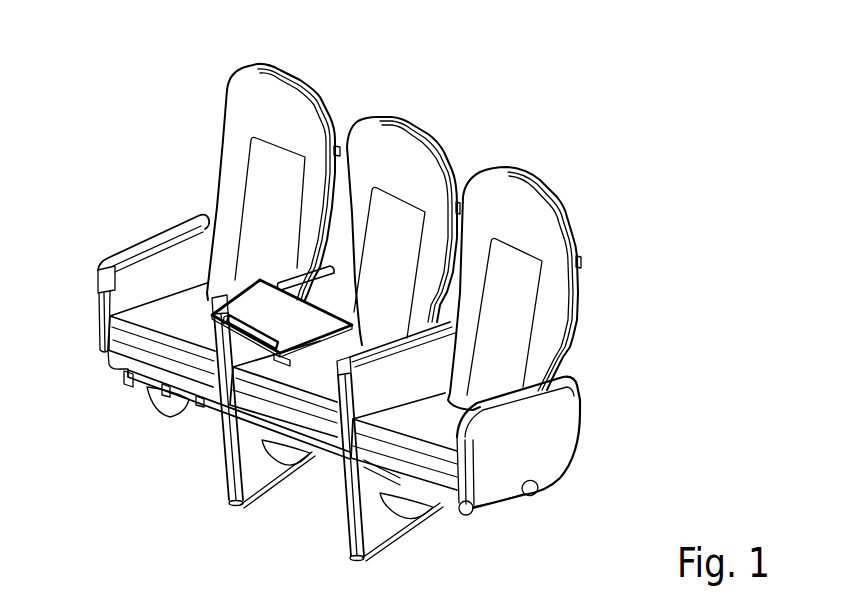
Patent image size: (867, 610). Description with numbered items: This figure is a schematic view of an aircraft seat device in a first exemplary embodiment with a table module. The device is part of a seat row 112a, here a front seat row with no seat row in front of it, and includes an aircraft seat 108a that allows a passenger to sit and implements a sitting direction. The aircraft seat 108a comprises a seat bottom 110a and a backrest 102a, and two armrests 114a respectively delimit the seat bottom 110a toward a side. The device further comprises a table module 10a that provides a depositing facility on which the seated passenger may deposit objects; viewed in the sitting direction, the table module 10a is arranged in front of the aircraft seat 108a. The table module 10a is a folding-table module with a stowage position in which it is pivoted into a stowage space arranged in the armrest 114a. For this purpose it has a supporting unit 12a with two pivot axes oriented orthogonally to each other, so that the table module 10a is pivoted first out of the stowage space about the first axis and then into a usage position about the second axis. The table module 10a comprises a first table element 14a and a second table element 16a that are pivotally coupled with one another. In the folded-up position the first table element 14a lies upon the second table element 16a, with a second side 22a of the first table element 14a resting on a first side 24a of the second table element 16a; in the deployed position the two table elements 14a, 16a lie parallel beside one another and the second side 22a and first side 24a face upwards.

The table module 10a is at (338, 334).
The supporting unit 12a is at (203, 293).
The first table element 14a is at (325, 332).
The second table element 16a is at (203, 293).
The second side of the first table element 22a is at (297, 283).
The first side of the second table element 24a is at (256, 294).
The backrest 102a is at (419, 168).
The aircraft seat 108a is at (393, 167).
The seat bottom 110a is at (298, 372).
The seat row 112a is at (582, 444).
The armrest 114a is at (308, 324).